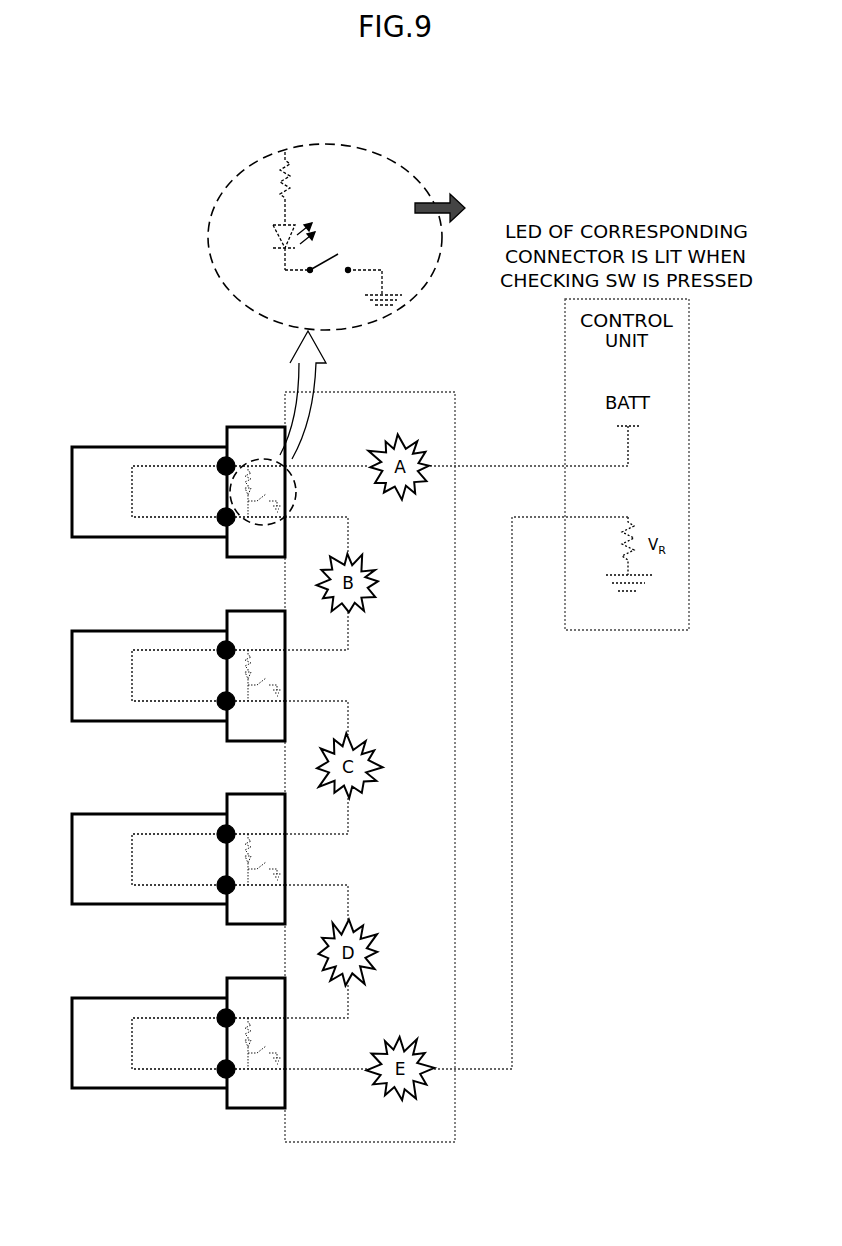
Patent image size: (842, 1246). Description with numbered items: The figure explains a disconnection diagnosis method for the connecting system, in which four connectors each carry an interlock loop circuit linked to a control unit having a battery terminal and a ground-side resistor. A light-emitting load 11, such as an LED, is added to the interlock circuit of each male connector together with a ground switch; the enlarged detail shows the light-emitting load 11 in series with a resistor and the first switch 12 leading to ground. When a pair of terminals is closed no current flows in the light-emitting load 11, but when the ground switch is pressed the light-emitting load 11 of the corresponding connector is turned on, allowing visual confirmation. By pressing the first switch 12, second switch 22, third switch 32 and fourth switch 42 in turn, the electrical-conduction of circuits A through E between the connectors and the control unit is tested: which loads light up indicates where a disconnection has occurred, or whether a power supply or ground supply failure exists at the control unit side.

The light-emitting load 11 is at (259, 234).
The first switch 12 is at (382, 136).
The second switch 22 is at (177, 658).
The third switch 32 is at (178, 841).
The fourth switch 42 is at (177, 1025).